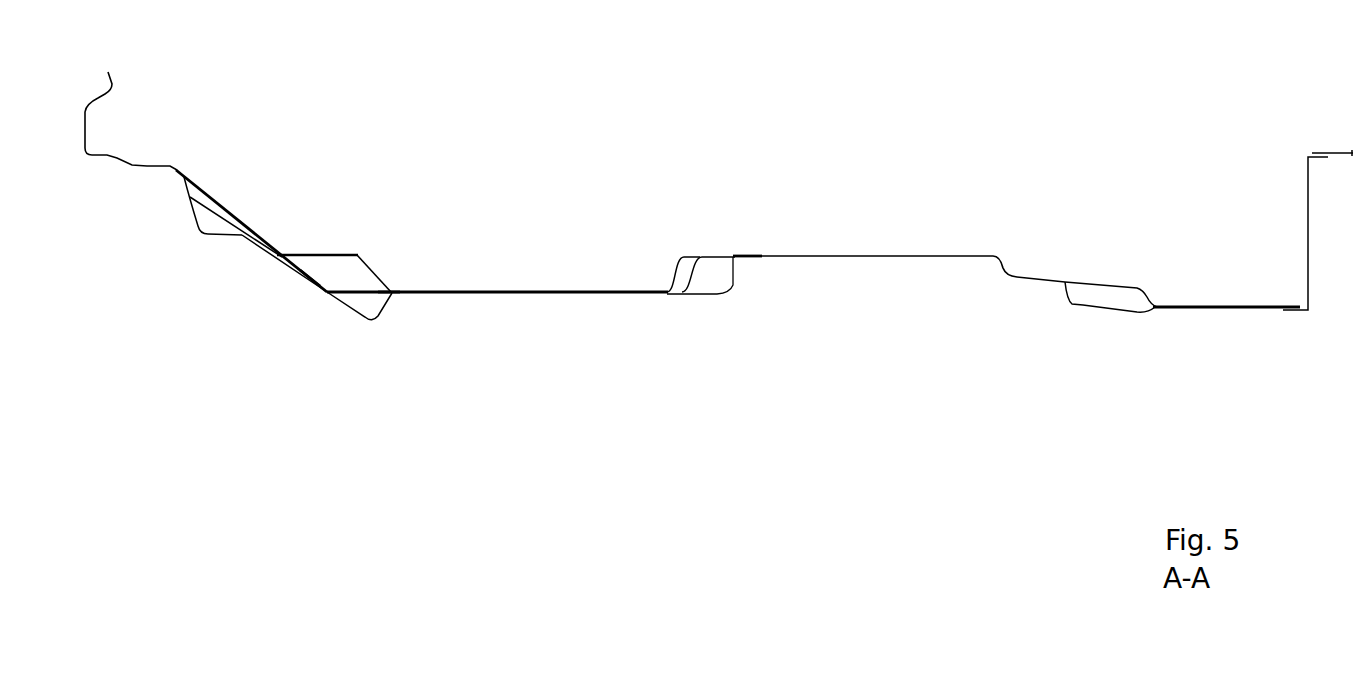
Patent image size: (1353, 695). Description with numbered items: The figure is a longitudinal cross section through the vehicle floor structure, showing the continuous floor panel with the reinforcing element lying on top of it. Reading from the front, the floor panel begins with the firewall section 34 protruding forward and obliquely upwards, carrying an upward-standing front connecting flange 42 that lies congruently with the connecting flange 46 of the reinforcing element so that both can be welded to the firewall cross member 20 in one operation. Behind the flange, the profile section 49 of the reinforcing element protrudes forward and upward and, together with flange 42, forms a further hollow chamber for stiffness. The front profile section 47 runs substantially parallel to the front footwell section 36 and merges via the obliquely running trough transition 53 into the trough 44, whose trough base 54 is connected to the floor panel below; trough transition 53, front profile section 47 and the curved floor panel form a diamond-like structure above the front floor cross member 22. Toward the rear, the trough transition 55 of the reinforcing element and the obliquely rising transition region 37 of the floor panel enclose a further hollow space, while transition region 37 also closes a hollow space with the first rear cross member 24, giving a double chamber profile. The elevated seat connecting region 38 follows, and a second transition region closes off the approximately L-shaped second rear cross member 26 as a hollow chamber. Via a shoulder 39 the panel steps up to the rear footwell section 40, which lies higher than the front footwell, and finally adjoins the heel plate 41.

The firewall cross member 20 is at (98, 98).
The front floor cross member 22 is at (370, 322).
The first rear cross member 24 is at (717, 297).
The second rear cross member 26 is at (1082, 305).
The firewall section 34 is at (313, 280).
The front footwell section 36 is at (357, 290).
The transition region 37 is at (678, 297).
The seat connecting region 38 is at (892, 255).
The shoulder 39 is at (1088, 285).
The rear footwell section 40 is at (1225, 305).
The heel plate 41 is at (1308, 258).
The front connecting flange 42 is at (194, 214).
The trough 44 is at (598, 238).
The connecting flange 46 is at (180, 175).
The front profile section 47 is at (300, 254).
The profile section 49 is at (230, 222).
The trough transition 53 is at (390, 288).
The trough base 54 is at (510, 290).
The trough transition 55 is at (677, 254).